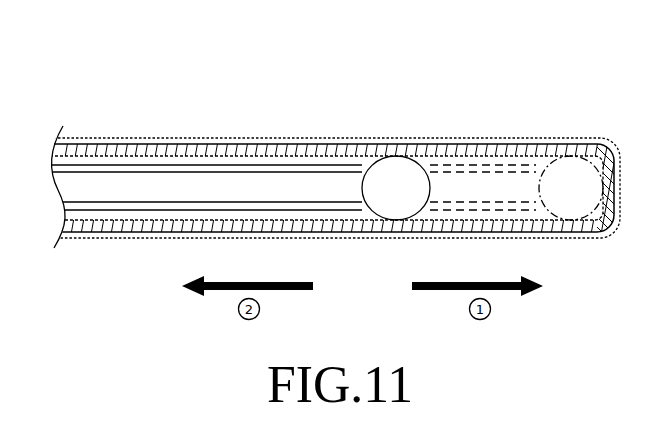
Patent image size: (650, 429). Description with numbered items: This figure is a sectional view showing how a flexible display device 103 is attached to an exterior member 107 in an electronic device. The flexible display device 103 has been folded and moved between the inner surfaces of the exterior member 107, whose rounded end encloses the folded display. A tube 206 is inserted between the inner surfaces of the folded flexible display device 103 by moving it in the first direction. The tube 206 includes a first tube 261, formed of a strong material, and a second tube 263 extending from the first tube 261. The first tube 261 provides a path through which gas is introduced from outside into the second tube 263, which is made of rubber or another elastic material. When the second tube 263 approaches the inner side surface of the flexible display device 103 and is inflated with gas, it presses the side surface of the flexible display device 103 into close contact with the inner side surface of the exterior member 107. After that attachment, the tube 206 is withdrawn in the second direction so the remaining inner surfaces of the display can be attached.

The flexible display device 103 is at (500, 148).
The exterior member 107 is at (562, 150).
The tube 206 is at (432, 63).
The first tube 261 is at (271, 170).
The second tube 263 is at (442, 180).